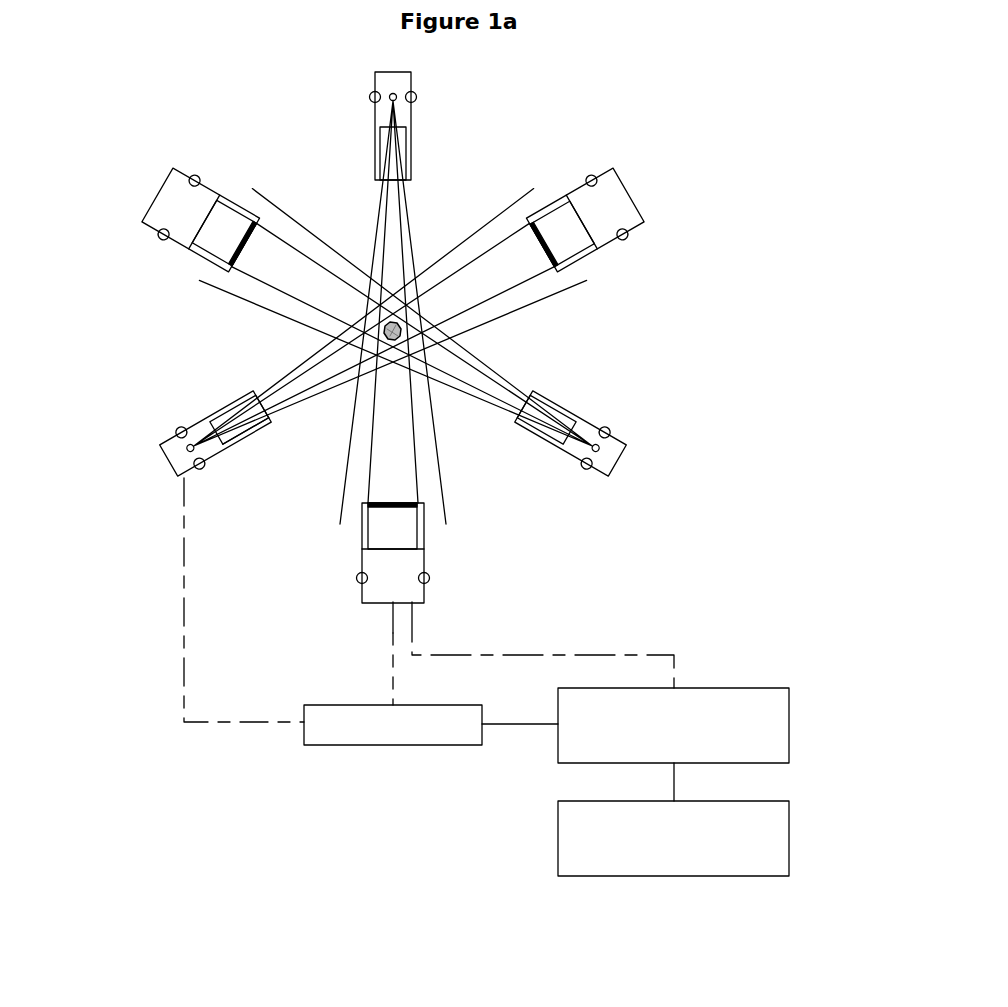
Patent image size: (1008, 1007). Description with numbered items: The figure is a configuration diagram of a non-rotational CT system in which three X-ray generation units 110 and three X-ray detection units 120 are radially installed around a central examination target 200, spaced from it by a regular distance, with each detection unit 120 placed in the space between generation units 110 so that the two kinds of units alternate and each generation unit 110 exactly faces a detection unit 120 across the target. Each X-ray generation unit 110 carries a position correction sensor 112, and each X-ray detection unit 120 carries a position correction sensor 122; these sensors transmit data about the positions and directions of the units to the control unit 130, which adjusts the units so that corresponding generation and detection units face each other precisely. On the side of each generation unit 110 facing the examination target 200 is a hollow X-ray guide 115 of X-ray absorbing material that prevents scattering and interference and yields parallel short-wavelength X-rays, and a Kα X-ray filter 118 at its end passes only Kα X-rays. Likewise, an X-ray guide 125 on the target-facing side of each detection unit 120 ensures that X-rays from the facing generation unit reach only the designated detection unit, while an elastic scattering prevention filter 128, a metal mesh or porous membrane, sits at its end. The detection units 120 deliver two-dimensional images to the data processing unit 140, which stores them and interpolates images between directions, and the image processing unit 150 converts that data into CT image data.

The X-ray generation unit 110 is at (168, 463).
The position correction sensor 112 is at (175, 432).
The X-ray guide 115 is at (260, 440).
The Kα X-ray filter 118 is at (262, 396).
The X-ray detection unit 120 is at (438, 555).
The position correction sensor 122 is at (430, 577).
The X-ray guide 125 is at (360, 534).
The elastic scattering prevention filter 128 is at (408, 504).
The examination target 200 is at (405, 330).
The control unit 130 is at (447, 738).
The data processing unit 140 is at (789, 722).
The image processing unit 150 is at (789, 833).